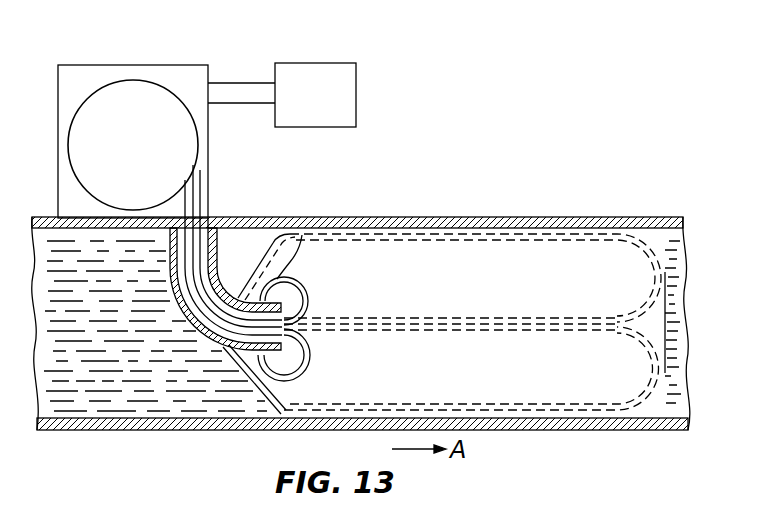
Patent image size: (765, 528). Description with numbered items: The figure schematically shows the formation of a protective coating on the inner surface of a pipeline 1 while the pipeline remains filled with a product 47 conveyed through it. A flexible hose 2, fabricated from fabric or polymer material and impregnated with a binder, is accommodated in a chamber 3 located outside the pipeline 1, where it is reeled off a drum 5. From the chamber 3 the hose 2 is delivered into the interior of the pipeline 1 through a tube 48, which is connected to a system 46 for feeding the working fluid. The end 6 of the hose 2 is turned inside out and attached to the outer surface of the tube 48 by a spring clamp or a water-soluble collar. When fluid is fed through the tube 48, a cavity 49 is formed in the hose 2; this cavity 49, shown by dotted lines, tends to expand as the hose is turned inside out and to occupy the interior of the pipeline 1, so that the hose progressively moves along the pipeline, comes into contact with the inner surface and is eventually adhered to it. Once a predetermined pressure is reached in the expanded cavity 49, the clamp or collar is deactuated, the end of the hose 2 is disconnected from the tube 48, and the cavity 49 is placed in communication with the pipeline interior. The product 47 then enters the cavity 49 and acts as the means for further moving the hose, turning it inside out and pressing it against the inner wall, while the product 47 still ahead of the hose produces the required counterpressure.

The pipeline 1 is at (475, 223).
The flexible hose 2 is at (199, 201).
The chamber 3 is at (143, 65).
The drum 5 is at (98, 107).
The end of the flexible hose 6 is at (308, 226).
The system for feeding the working fluid 46 is at (325, 78).
The product 47 is at (125, 408).
The tube 48 is at (197, 337).
The cavity 49 is at (556, 242).